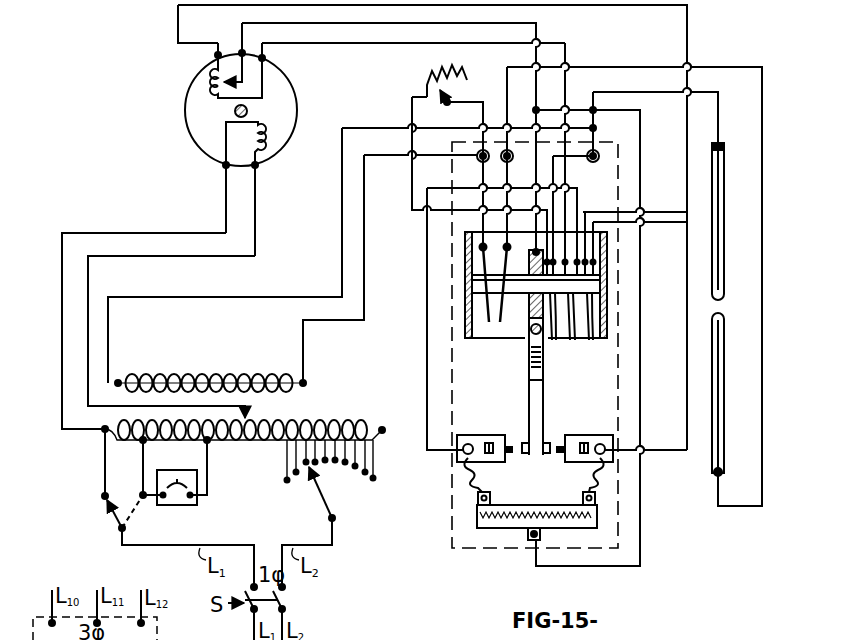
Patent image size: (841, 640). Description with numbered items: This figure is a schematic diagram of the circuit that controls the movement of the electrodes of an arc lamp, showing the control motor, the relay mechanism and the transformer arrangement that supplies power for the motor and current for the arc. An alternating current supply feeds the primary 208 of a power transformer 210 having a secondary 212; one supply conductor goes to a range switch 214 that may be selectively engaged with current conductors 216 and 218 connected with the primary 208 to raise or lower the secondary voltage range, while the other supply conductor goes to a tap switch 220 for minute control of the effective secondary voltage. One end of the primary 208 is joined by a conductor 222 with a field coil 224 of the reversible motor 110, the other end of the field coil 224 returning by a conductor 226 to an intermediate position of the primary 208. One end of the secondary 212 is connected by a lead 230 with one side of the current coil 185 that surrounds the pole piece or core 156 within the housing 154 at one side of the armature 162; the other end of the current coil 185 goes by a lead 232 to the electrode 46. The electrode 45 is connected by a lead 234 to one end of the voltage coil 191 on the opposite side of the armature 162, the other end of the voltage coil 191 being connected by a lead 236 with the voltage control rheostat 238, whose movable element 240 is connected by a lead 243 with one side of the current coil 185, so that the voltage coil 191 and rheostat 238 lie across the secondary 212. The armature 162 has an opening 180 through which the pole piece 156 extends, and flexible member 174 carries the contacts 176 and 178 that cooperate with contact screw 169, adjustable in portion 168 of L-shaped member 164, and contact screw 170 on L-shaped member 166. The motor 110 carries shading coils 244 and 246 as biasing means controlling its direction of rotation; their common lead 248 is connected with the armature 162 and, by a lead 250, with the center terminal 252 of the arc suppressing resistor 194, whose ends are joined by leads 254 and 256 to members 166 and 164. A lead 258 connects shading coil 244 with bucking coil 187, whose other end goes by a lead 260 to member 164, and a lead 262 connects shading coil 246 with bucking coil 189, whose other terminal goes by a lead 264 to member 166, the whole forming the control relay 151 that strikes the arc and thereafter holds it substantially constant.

The electrode 45 is at (720, 233).
The electrode 46 is at (720, 365).
The motor 110 is at (188, 130).
The control relay 151 is at (497, 551).
The housing 154 is at (608, 243).
The core 156 is at (470, 276).
The armature 162 is at (529, 374).
The L-shaped member 164 is at (613, 468).
The L-shaped member 166 is at (457, 464).
The portion 168 is at (578, 446).
The contact screw 169 is at (575, 448).
The contact screw 170 is at (490, 421).
The flexible member 174 is at (529, 393).
The contact 176 is at (546, 444).
The contact 178 is at (525, 440).
The opening 180 is at (535, 252).
The current coil 185 is at (489, 332).
The bucking coil 187 is at (590, 320).
The bucking coil 189 is at (570, 320).
The voltage coil 191 is at (552, 320).
The arc suppressing resistor 194 is at (598, 526).
The primary 208 is at (302, 422).
The power transformer 210 is at (316, 383).
The secondary 212 is at (172, 374).
The range switch 214 is at (115, 516).
The current conductor 216 is at (143, 455).
The current conductor 218 is at (105, 455).
The tap switch 220 is at (322, 497).
The conductor 222 is at (62, 262).
The field coil 224 is at (262, 152).
The conductor 226 is at (255, 242).
The lead 230 is at (364, 226).
The lead 232 is at (590, 67).
The lead 234 is at (700, 92).
The lead 236 is at (412, 178).
The voltage control rheostat 238 is at (449, 71).
The movable element 240 is at (500, 84).
The lead 243 is at (481, 117).
The shading coil 244 is at (210, 74).
The shading coil 246 is at (212, 90).
The lead 248 is at (241, 36).
The lead 250 is at (641, 128).
The center terminal 252 is at (540, 541).
The lead 254 is at (470, 478).
The lead 256 is at (598, 490).
The lead 258 is at (178, 23).
The lead 260 is at (687, 304).
The lead 262 is at (316, 43).
The lead 264 is at (612, 184).